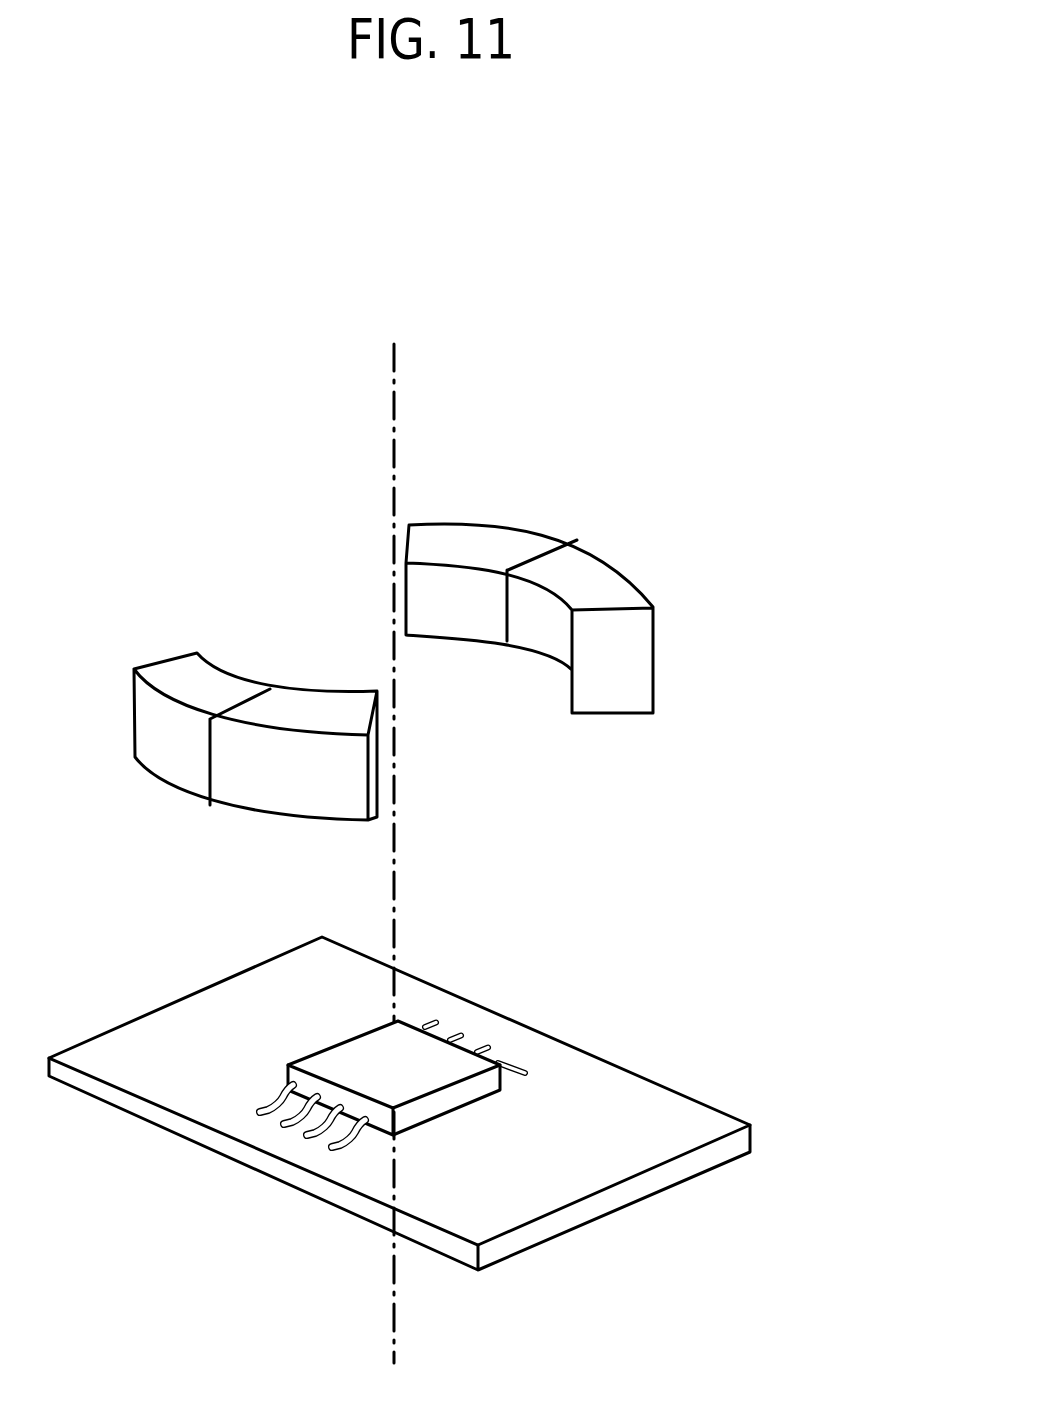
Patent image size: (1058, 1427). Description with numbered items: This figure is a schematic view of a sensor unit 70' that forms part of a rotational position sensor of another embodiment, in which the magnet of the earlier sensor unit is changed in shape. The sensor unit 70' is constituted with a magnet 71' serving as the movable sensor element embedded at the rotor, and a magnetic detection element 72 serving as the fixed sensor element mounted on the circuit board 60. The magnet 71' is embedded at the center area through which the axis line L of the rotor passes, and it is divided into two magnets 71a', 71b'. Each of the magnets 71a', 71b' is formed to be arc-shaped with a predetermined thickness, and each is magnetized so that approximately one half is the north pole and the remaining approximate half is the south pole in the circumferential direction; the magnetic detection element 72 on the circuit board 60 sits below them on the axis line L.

The axis line L is at (394, 401).
The circuit board 60 is at (640, 1092).
The magnetic detection element 72 is at (430, 1068).
The sensor unit 70' is at (515, 603).
The magnet 71' is at (432, 603).
The magnet 71a' is at (255, 676).
The magnet 71b' is at (561, 569).